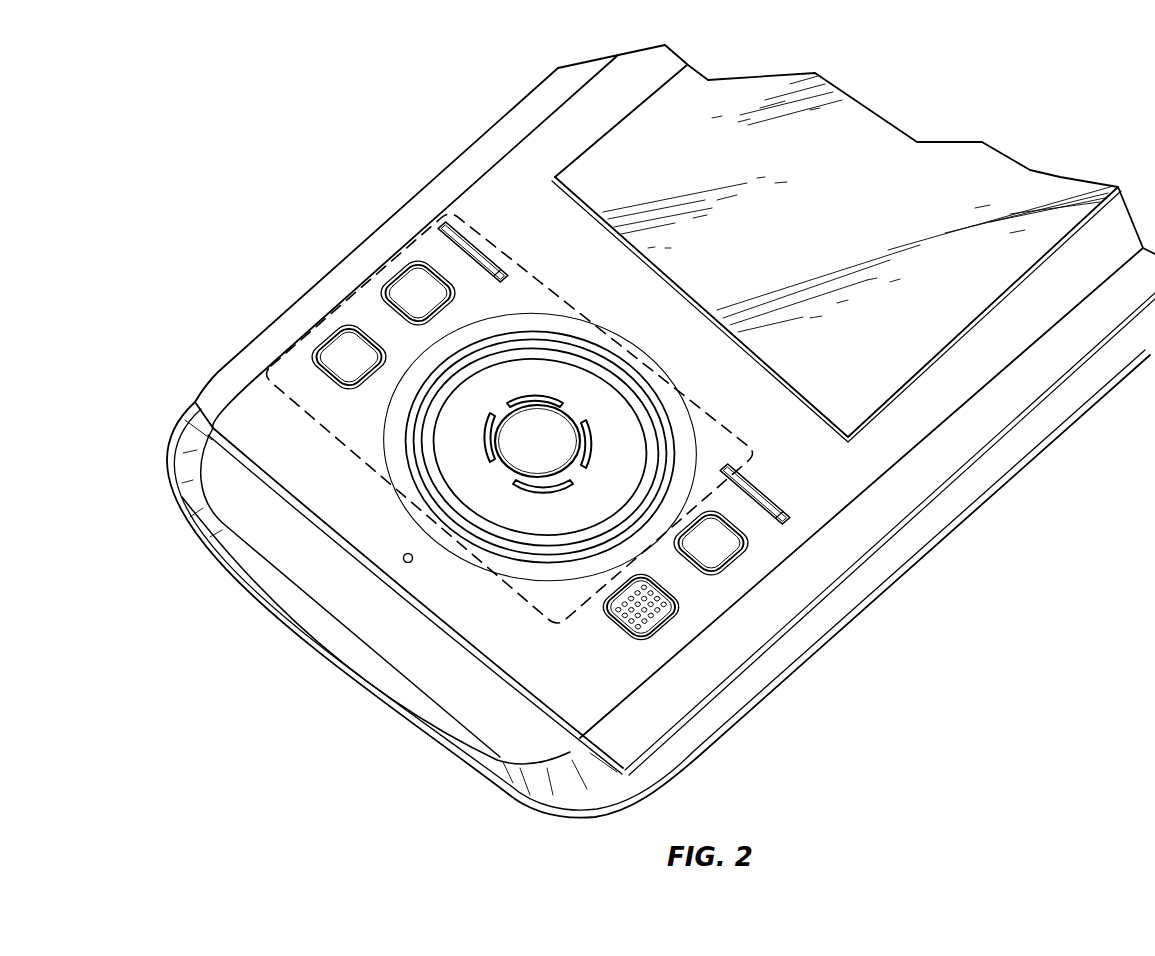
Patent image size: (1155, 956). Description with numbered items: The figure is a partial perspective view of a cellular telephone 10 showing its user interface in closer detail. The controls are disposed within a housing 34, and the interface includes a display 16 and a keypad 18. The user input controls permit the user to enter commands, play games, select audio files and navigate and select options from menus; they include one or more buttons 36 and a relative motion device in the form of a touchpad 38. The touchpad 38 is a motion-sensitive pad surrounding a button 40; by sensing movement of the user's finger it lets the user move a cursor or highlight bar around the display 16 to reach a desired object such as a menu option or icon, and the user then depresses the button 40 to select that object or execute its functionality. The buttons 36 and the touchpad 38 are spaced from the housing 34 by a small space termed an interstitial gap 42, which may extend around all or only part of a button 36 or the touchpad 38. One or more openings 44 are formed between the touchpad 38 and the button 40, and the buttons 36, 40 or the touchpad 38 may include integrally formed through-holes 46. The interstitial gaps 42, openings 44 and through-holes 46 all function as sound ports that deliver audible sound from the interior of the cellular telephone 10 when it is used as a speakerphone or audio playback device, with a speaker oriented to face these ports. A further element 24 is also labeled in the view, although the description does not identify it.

The cellular telephone 10 is at (305, 101).
The display 16 is at (878, 155).
The keypad 18 is at (385, 142).
The indicator light 24 is at (404, 562).
The housing 34 is at (1010, 390).
The buttons 36 is at (447, 226).
The touchpad 38 is at (533, 367).
The button 40 is at (525, 438).
The interstitial gap 42 is at (587, 447).
The openings 44 is at (553, 393).
The through-holes 46 is at (650, 640).